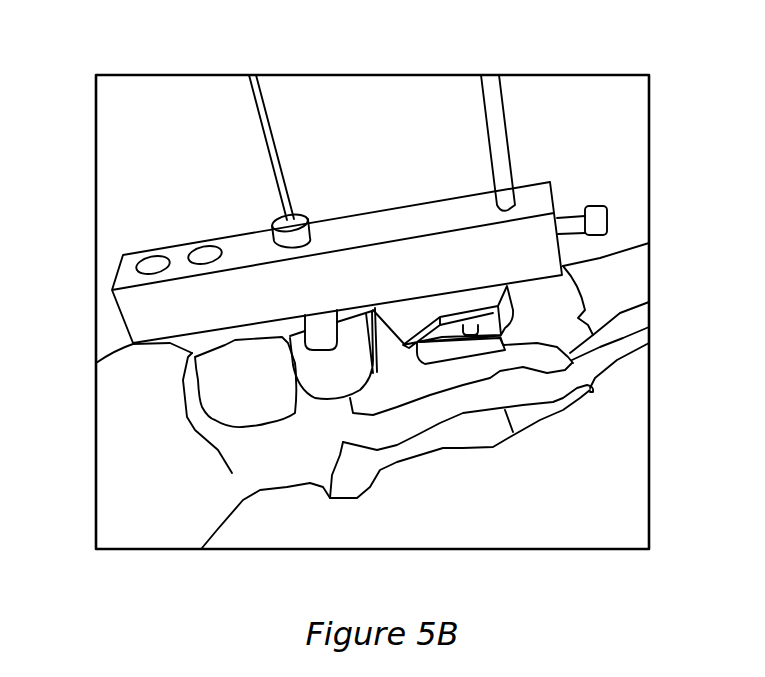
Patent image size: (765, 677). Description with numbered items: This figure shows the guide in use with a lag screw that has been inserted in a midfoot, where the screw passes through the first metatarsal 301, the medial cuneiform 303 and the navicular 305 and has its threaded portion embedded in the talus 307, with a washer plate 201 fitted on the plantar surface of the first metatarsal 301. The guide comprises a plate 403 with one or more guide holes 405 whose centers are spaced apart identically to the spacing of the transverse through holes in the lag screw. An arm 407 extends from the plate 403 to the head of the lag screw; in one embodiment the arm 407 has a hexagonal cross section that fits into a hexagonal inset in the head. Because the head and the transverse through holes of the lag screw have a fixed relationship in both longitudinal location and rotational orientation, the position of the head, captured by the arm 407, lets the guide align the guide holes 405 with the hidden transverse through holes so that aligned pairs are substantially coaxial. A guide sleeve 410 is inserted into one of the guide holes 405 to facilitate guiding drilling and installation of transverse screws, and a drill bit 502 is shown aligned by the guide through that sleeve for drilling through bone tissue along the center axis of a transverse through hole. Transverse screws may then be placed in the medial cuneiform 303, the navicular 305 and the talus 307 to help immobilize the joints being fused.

The washer plate 201 is at (418, 367).
The first metatarsal 301 is at (395, 373).
The medial cuneiform 303 is at (307, 393).
The navicular 305 is at (242, 400).
The talus 307 is at (163, 400).
The plate 403 is at (400, 213).
The guide holes 405 is at (205, 250).
The arm 407 is at (508, 137).
The guide sleeve 410 is at (297, 213).
The drill bit 502 is at (252, 103).